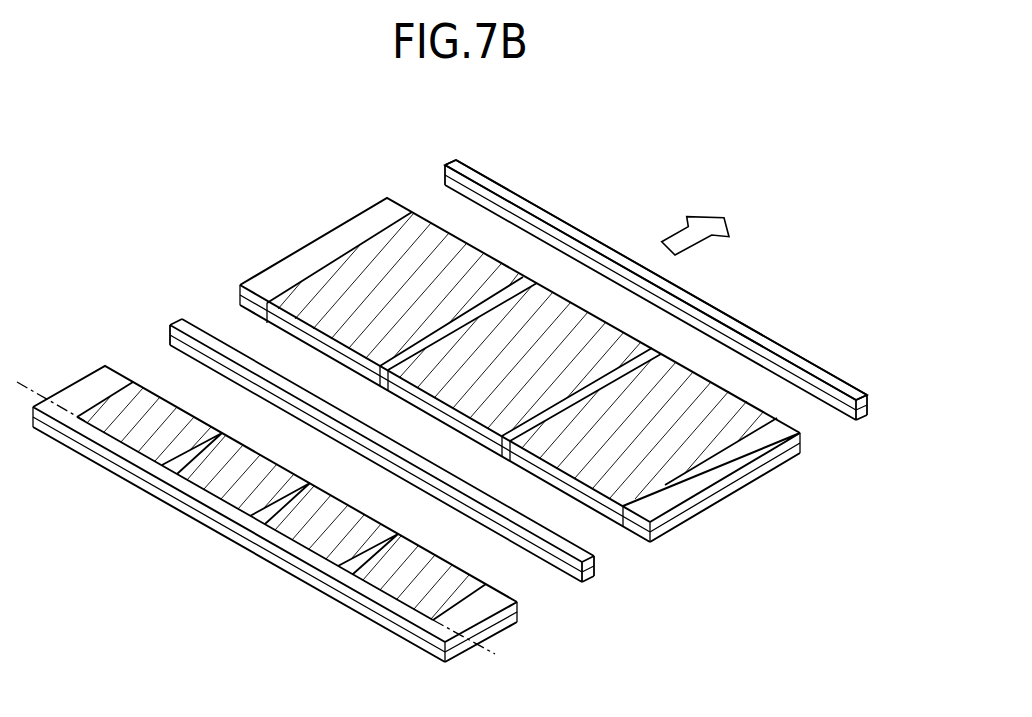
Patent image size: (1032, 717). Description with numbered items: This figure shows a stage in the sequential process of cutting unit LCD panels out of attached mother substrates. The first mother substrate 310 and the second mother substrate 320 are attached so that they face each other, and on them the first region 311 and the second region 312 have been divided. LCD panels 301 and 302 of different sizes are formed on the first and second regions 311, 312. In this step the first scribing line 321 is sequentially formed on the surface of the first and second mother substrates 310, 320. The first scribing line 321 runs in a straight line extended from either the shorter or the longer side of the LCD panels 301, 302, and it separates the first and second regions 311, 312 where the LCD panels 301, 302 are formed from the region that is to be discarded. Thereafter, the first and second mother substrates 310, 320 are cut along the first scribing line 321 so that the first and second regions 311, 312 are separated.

The LCD panel 301 is at (430, 250).
The LCD panel 302 is at (150, 415).
The first mother substrate 310 is at (866, 412).
The first region 311 is at (391, 189).
The second region 312 is at (100, 358).
The second mother substrate 320 is at (868, 394).
The first scribing line 321 is at (478, 645).